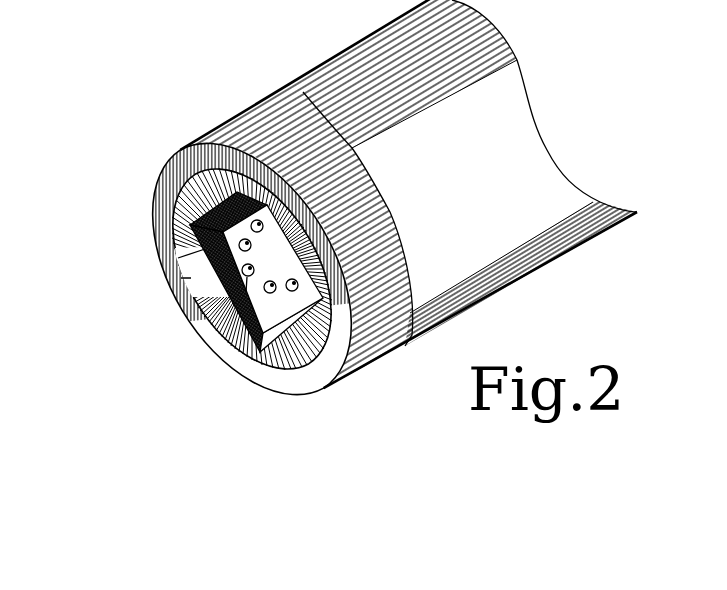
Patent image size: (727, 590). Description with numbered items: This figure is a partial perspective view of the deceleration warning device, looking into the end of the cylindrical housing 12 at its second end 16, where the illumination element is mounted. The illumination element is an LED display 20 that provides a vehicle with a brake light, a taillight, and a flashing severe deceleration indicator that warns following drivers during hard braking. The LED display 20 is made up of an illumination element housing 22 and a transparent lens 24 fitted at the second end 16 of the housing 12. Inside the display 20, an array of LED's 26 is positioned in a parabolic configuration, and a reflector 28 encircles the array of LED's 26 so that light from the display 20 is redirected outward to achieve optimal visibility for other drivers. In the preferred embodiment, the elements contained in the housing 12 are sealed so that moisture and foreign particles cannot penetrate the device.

The housing 12 is at (497, 220).
The second end 16 is at (335, 358).
The LED display 20 is at (156, 161).
The illumination element housing 22 is at (242, 128).
The transparent lens 24 is at (170, 277).
The array of LED's 26 is at (193, 303).
The reflector 28 is at (293, 352).